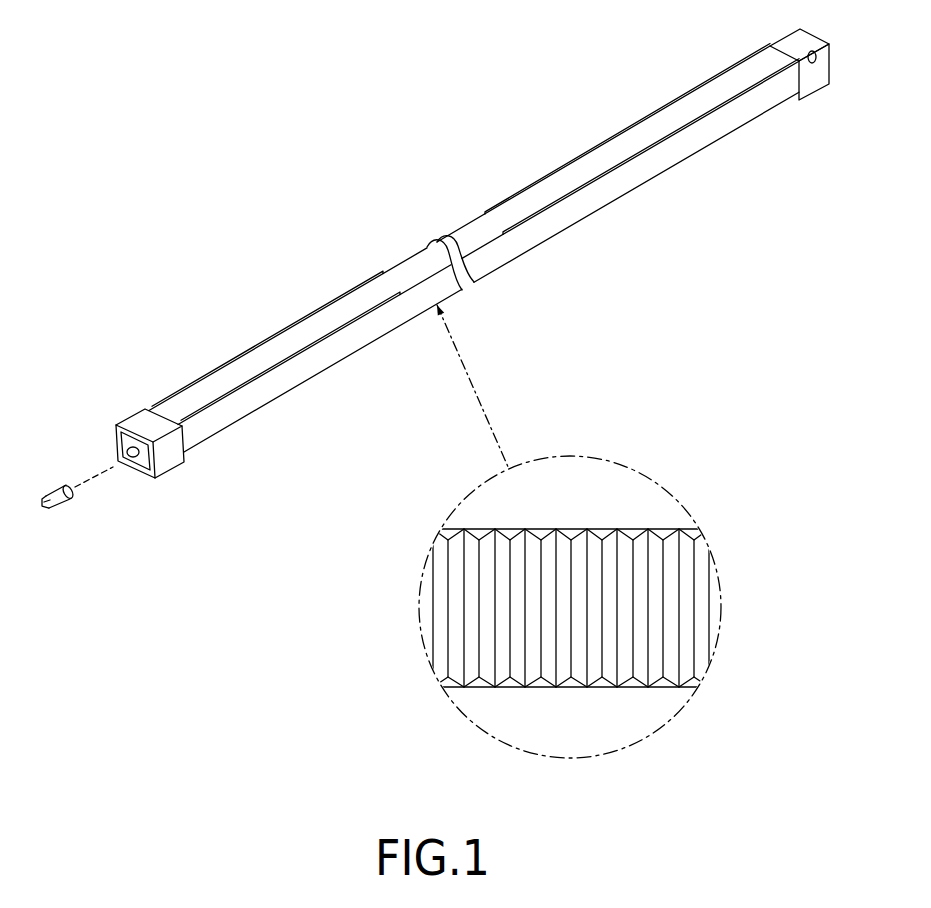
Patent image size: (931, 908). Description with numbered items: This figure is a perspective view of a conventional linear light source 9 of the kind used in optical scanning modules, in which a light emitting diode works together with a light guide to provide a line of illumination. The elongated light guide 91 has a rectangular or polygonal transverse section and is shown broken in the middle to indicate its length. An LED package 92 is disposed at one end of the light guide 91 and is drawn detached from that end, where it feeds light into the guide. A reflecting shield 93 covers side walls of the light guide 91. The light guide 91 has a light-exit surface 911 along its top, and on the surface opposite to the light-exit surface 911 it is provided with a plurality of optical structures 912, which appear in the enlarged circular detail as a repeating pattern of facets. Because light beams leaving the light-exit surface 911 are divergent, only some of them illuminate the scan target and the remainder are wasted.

The linear light source 9 is at (226, 145).
The light guide 91 is at (400, 247).
The light-exit surface 911 is at (558, 190).
The optical structures 912 is at (462, 578).
The reflecting shield 93 is at (173, 397).
The LED package 92 is at (62, 503).